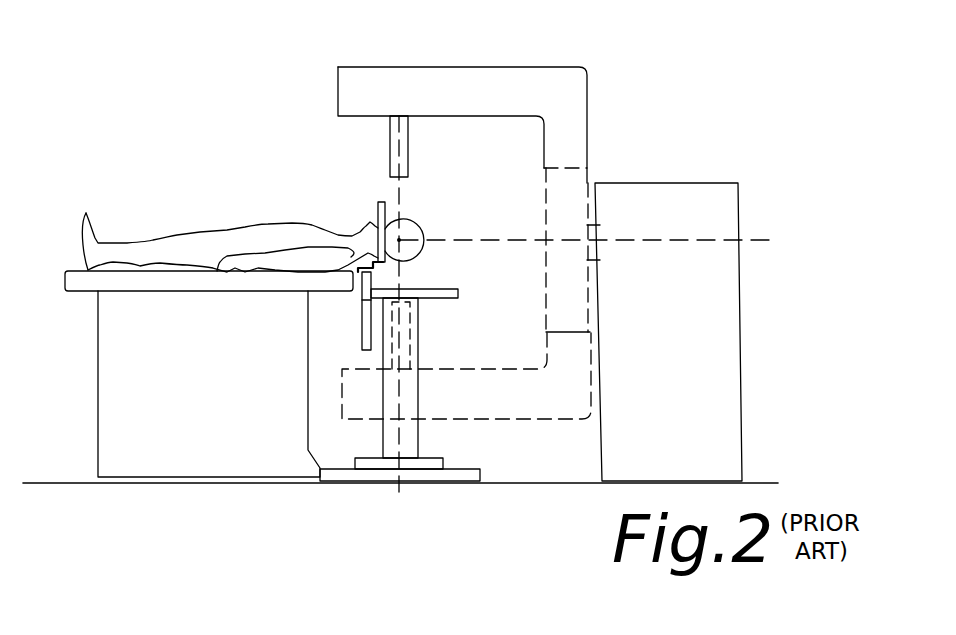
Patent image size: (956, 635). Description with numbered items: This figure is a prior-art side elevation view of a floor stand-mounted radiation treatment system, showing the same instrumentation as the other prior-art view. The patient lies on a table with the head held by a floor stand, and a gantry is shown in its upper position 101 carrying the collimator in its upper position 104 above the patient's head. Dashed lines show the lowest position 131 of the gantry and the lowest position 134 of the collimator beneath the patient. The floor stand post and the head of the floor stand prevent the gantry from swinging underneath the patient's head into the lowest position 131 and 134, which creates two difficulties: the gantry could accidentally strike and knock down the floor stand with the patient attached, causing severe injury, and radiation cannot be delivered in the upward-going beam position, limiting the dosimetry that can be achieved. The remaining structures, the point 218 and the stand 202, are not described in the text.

The upper position of the gantry 101 is at (470, 67).
The upper position of the collimator 104 is at (389, 148).
The isocenter 218 is at (404, 238).
The gantry stand 202 is at (757, 240).
The lowest position of the collimator 134 is at (401, 345).
The lowest position of the gantry 131 is at (462, 370).